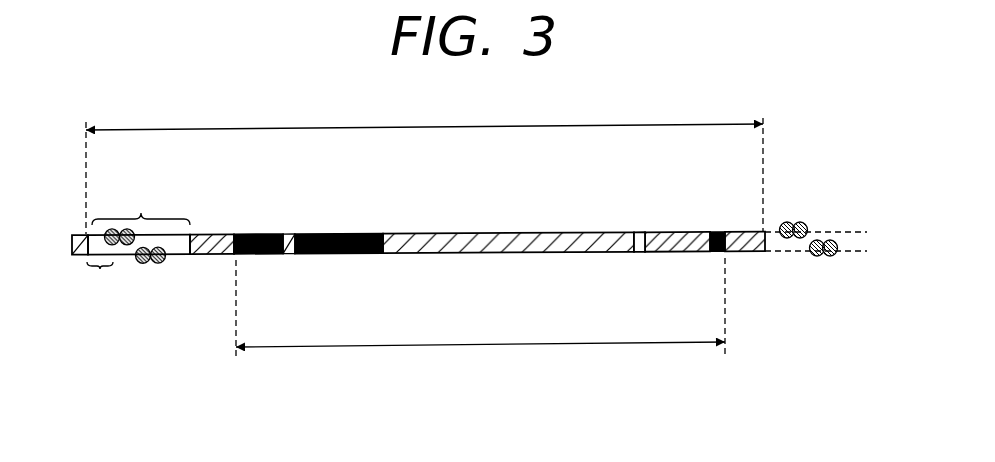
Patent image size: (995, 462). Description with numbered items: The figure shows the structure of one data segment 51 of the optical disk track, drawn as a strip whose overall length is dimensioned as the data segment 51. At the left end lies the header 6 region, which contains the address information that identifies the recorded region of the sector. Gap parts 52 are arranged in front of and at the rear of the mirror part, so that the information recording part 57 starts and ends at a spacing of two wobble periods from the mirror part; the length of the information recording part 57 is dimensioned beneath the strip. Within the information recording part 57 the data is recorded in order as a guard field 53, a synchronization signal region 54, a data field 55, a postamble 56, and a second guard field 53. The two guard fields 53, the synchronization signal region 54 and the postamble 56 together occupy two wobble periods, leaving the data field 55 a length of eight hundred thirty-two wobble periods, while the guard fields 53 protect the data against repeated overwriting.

The header 6 is at (141, 212).
The data segment 51 is at (414, 127).
The gap part 52 is at (216, 235).
The guard field 53 is at (265, 235).
The synchronization signal region 54 is at (355, 234).
The data field 55 is at (495, 233).
The postamble 56 is at (642, 233).
The information recording part 57 is at (481, 344).